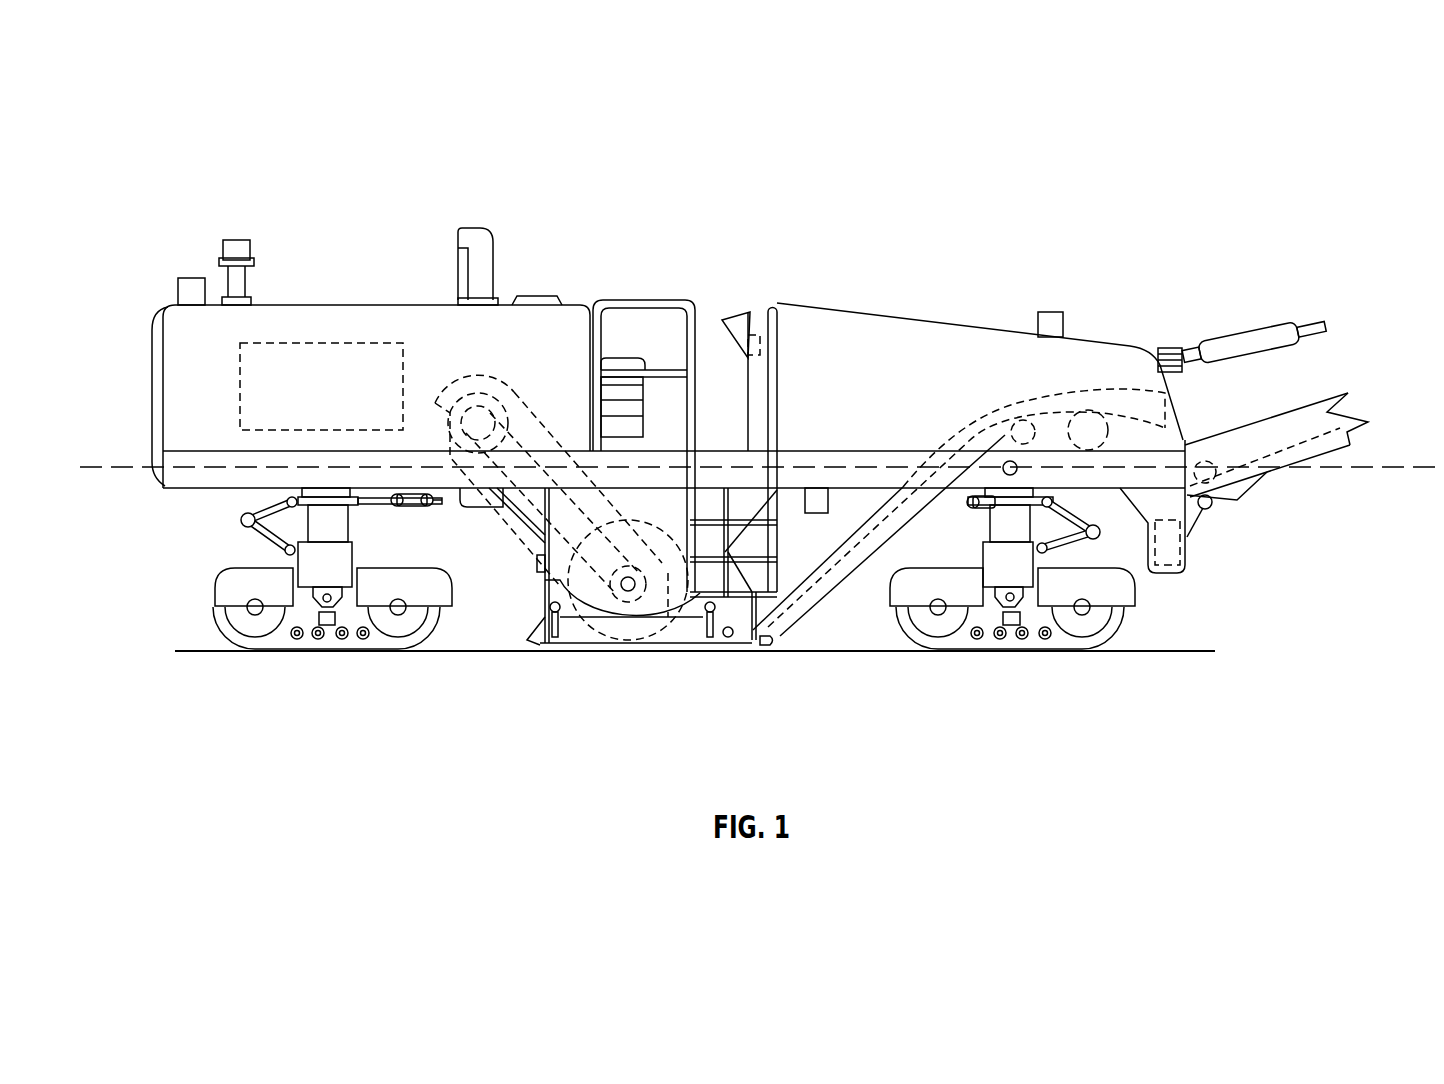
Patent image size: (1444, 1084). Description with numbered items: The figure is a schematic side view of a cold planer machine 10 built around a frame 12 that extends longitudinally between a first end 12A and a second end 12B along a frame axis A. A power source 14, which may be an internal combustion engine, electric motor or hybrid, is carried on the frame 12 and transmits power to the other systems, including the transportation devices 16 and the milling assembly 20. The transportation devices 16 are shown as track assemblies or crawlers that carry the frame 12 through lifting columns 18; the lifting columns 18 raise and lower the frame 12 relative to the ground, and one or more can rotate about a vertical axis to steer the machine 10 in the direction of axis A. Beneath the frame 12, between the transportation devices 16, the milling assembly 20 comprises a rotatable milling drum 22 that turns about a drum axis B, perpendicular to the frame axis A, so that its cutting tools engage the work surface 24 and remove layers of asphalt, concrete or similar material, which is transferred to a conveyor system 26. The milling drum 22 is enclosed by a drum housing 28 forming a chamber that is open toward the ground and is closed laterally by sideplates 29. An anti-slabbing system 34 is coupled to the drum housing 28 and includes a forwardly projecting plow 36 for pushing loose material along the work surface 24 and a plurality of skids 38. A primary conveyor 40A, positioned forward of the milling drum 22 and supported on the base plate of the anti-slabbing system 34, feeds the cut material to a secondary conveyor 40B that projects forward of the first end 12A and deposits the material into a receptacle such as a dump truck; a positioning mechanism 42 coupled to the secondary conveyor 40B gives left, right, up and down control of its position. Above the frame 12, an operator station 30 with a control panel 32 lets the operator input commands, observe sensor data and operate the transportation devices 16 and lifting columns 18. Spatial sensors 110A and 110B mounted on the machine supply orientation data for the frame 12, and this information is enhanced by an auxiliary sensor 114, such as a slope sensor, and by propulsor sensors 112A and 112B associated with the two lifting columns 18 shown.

The cold planer machine 10 is at (1283, 192).
The frame 12 is at (168, 490).
The first end 12A is at (1183, 445).
The second end 12B is at (153, 478).
The power source 14 is at (320, 353).
The transportation devices 16 is at (222, 617).
The lifting columns 18 is at (336, 532).
The milling assembly 20 is at (545, 608).
The milling drum 22 is at (671, 647).
The work surface 24 is at (592, 652).
The conveyor system 26 is at (1352, 409).
The drum housing 28 is at (652, 492).
The sideplates 29 is at (540, 650).
The operator station 30 is at (707, 316).
The control panel 32 is at (735, 313).
The anti-slabbing system 34 is at (774, 642).
The plow 36 is at (763, 648).
The skids 38 is at (723, 652).
The primary conveyor 40A is at (855, 568).
The secondary conveyor 40B is at (1290, 481).
The positioning mechanism 42 is at (1266, 327).
The spatial sensor 110A is at (1050, 318).
The spatial sensor 110B is at (192, 290).
The propulsor sensor 112A is at (1013, 626).
The propulsor sensor 112B is at (322, 628).
The auxiliary sensor 114 is at (818, 497).
The frame axis A is at (1365, 471).
The drum axis B is at (629, 591).